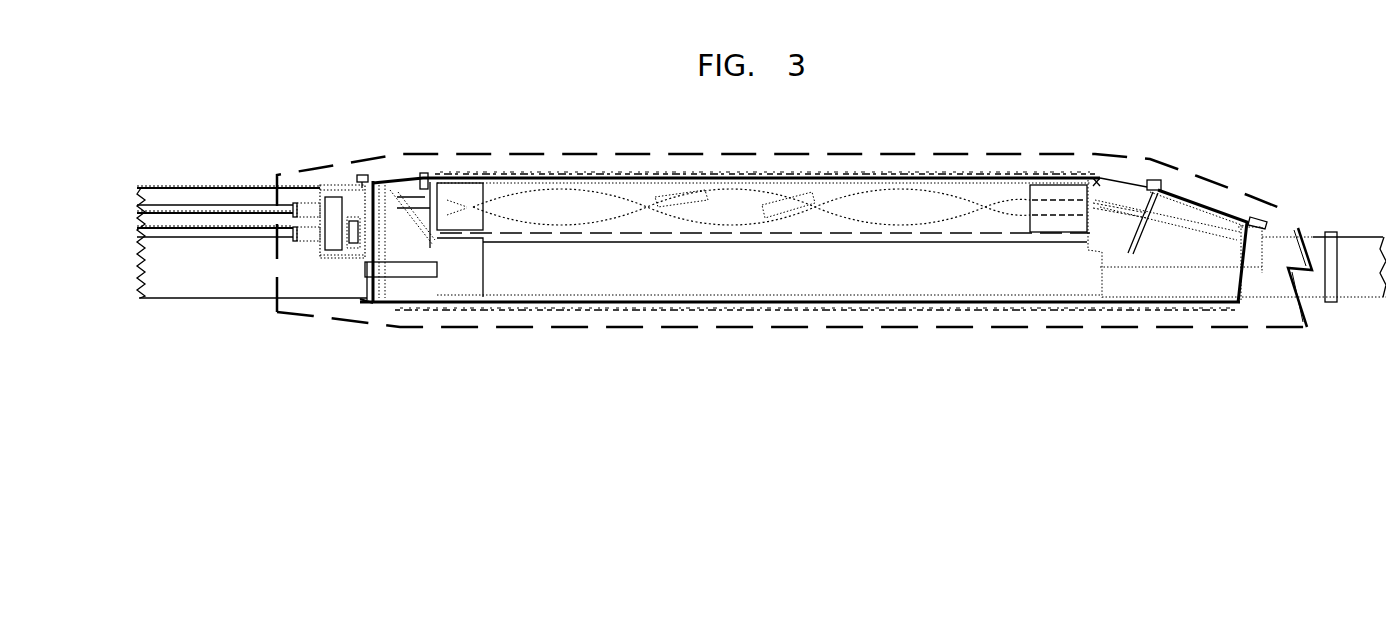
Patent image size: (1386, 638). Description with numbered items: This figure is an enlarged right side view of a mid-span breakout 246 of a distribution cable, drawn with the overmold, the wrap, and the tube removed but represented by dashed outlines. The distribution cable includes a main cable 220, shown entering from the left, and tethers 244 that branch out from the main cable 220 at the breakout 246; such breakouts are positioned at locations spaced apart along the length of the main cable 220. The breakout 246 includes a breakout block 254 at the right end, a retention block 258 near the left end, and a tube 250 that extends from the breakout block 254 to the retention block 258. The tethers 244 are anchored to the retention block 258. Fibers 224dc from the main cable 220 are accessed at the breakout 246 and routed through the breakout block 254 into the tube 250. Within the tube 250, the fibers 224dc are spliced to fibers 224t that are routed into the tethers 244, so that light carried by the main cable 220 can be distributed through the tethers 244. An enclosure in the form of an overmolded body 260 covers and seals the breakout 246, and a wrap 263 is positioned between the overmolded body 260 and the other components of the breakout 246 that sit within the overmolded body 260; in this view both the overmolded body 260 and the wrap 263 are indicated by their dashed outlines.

The main cable 220 is at (178, 298).
The tethers 244 is at (153, 218).
The retention block 258 is at (333, 185).
The wrap 263 is at (587, 172).
The fibers 224dc is at (927, 203).
The fibers 224t is at (573, 220).
The tube 250 is at (880, 232).
The breakout 246 is at (728, 329).
The breakout block 254 is at (1205, 203).
The overmolded body 260 is at (1203, 182).